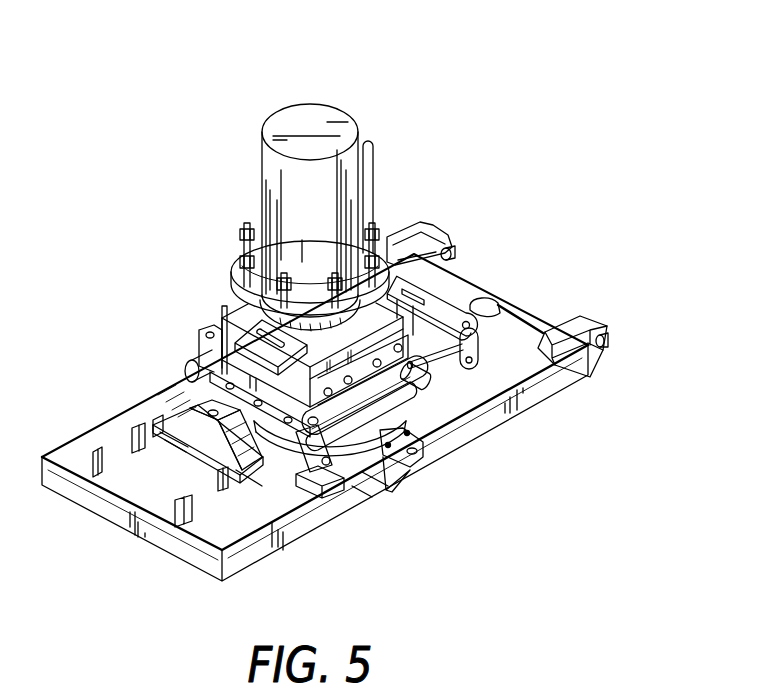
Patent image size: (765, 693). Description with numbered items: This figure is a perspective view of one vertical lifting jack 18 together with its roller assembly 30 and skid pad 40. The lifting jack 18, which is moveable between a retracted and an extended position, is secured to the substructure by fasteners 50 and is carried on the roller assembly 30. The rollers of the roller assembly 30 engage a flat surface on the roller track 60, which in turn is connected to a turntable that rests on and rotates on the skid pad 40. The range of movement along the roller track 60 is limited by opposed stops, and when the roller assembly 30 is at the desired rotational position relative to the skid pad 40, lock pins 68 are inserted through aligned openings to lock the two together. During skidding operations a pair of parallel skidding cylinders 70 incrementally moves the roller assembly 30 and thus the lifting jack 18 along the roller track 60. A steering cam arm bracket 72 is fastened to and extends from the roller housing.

The vertical lifting jack 18 is at (283, 192).
The roller assembly 30 is at (565, 215).
The skid pad 40 is at (360, 490).
The fasteners 50 is at (382, 230).
The roller track 60 is at (265, 437).
The lock pins 68 is at (200, 403).
The skidding cylinders 70 is at (412, 371).
The steering cam arm bracket 72 is at (416, 388).